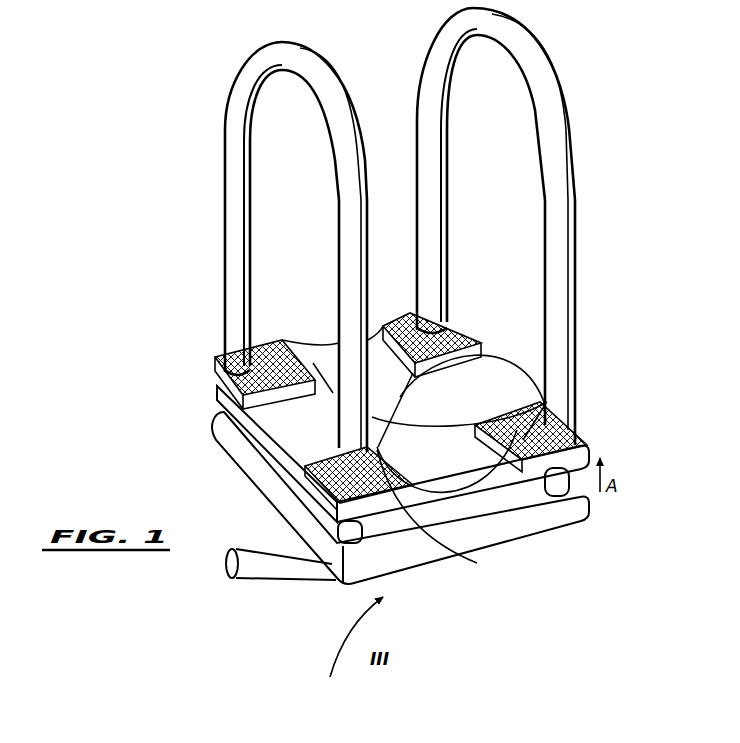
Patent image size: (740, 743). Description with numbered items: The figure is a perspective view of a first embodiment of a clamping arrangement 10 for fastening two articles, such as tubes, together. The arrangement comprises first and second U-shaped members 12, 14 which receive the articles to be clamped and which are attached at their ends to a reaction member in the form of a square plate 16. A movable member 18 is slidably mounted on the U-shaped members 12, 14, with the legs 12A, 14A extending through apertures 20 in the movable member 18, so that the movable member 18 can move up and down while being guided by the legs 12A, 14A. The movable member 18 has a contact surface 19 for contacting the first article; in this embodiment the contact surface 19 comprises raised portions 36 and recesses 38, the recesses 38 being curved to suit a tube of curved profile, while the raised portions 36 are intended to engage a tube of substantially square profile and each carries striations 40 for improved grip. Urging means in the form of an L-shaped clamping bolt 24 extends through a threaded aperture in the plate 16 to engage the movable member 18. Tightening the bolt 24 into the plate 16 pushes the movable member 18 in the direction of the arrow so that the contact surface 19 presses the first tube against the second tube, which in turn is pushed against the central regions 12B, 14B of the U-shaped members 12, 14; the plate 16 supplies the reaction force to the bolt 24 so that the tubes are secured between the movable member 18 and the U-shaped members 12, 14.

The clamping arrangement 10 is at (385, 43).
The first U-shaped member 12 is at (271, 229).
The legs of first U-shaped member 12A is at (350, 241).
The central region of first U-shaped member 12B is at (287, 54).
The second U-shaped member 14 is at (502, 222).
The legs of second U-shaped member 14A is at (550, 219).
The central region of second U-shaped member 14B is at (497, 21).
The square plate 16 is at (252, 472).
The movable member 18 is at (480, 343).
The contact surface 19 is at (383, 398).
The apertures 20 is at (305, 500).
The L-shaped clamping bolt 24 is at (271, 565).
The raised portions 36 is at (217, 378).
The recesses 38 is at (495, 402).
The striations 40 is at (437, 514).